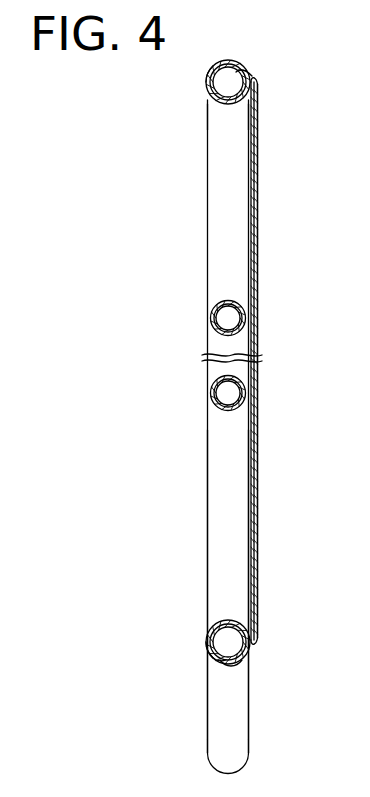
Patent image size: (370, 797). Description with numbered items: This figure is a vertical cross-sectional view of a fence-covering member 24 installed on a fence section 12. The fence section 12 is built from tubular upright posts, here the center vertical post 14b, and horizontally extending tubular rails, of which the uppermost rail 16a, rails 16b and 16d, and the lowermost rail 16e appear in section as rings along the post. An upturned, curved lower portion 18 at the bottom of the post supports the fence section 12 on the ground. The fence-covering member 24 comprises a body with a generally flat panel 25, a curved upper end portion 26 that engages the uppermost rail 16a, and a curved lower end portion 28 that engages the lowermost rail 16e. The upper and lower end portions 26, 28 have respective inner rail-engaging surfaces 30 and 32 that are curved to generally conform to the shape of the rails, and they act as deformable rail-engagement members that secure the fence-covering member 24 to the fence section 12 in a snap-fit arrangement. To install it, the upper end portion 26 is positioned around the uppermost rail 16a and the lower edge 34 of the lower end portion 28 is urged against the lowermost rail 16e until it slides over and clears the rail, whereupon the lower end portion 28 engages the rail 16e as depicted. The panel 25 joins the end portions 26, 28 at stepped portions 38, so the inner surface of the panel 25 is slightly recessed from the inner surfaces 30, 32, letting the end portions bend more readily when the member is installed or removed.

The fence section 12 is at (208, 258).
The center vertical post 14b is at (222, 504).
The uppermost horizontal rail 16a is at (223, 104).
The horizontal rail 16b is at (220, 302).
The horizontal rail 16d is at (226, 410).
The lowermost horizontal rail 16e is at (226, 621).
The upturned curved lower portion 18 is at (240, 751).
The fence-covering member 24 is at (264, 215).
The panel 25 is at (259, 277).
The upper end portion 26 is at (230, 60).
The lower end portion 28 is at (230, 664).
The inner rail-engaging surface 30 is at (244, 74).
The inner rail-engaging surface 32 is at (210, 655).
The lower edge 34 is at (208, 84).
The stepped portion 38 is at (256, 80).